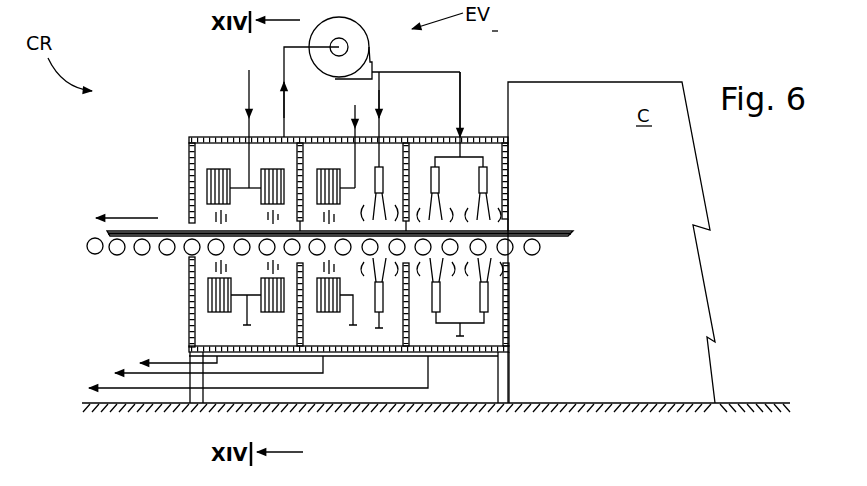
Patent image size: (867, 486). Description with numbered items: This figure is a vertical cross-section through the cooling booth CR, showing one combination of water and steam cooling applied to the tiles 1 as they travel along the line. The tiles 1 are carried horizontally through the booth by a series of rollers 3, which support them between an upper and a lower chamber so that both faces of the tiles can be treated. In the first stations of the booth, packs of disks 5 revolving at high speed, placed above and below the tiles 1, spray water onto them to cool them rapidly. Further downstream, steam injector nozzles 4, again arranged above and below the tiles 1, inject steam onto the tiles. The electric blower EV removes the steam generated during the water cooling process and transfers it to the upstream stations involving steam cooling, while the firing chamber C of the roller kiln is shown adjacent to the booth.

The tiles 1 is at (135, 231).
The rollers 3 is at (90, 252).
The steam injector nozzles 4 is at (439, 175).
The packs of disks 5 is at (207, 185).